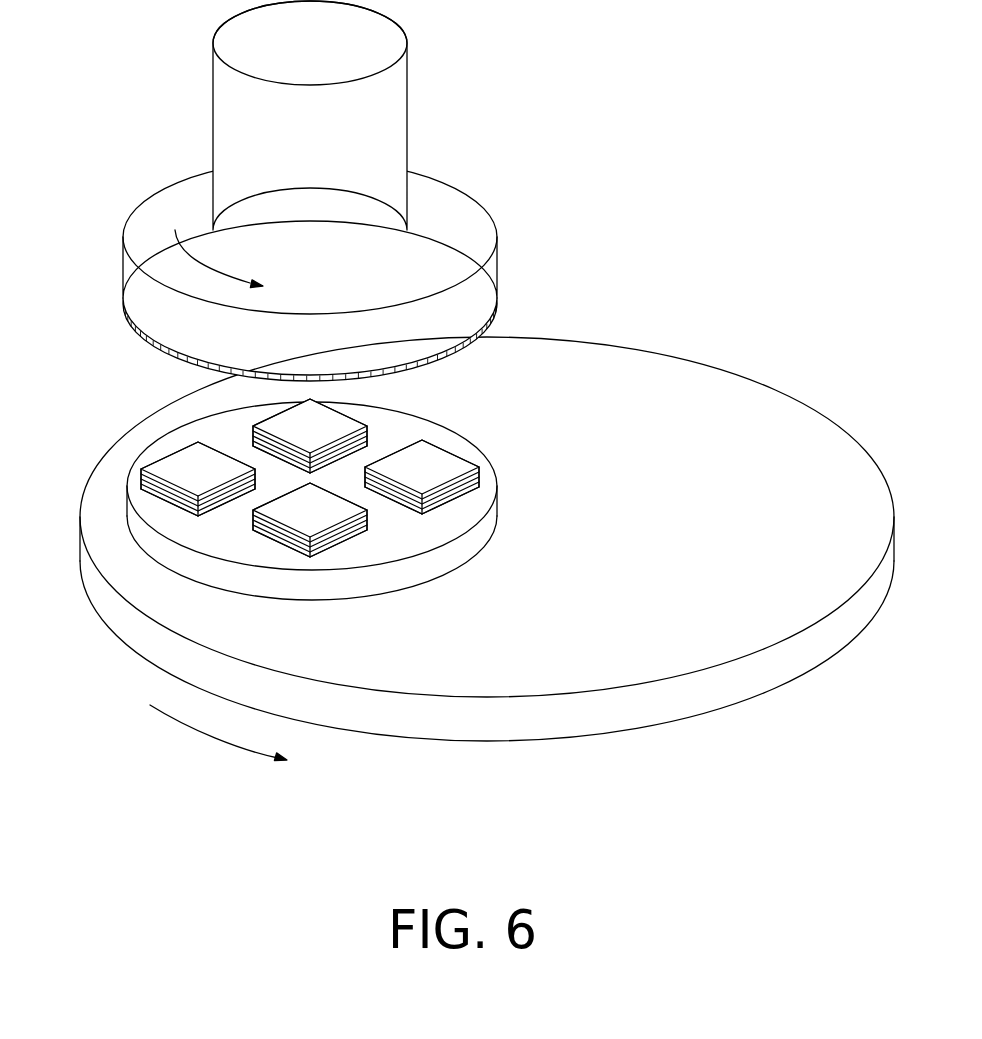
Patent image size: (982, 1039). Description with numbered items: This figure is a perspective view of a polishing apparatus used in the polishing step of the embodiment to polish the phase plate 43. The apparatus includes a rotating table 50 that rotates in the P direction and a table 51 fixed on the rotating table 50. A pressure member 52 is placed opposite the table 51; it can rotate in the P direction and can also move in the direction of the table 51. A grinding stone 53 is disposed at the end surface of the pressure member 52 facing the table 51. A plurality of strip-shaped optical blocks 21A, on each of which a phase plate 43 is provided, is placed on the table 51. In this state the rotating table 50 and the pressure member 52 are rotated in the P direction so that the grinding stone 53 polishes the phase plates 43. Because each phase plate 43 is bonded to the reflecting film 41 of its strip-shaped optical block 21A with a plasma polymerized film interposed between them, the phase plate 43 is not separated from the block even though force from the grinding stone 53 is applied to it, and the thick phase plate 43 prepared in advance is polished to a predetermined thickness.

The rotating table 50 is at (667, 643).
The table 51 is at (494, 503).
The pressure member 52 is at (452, 193).
The grinding stone 53 is at (487, 365).
The reflecting film 41 is at (142, 472).
The phase plate 43 is at (177, 465).
The strip-shaped optical block 21A is at (242, 448).
The P direction P is at (178, 248).